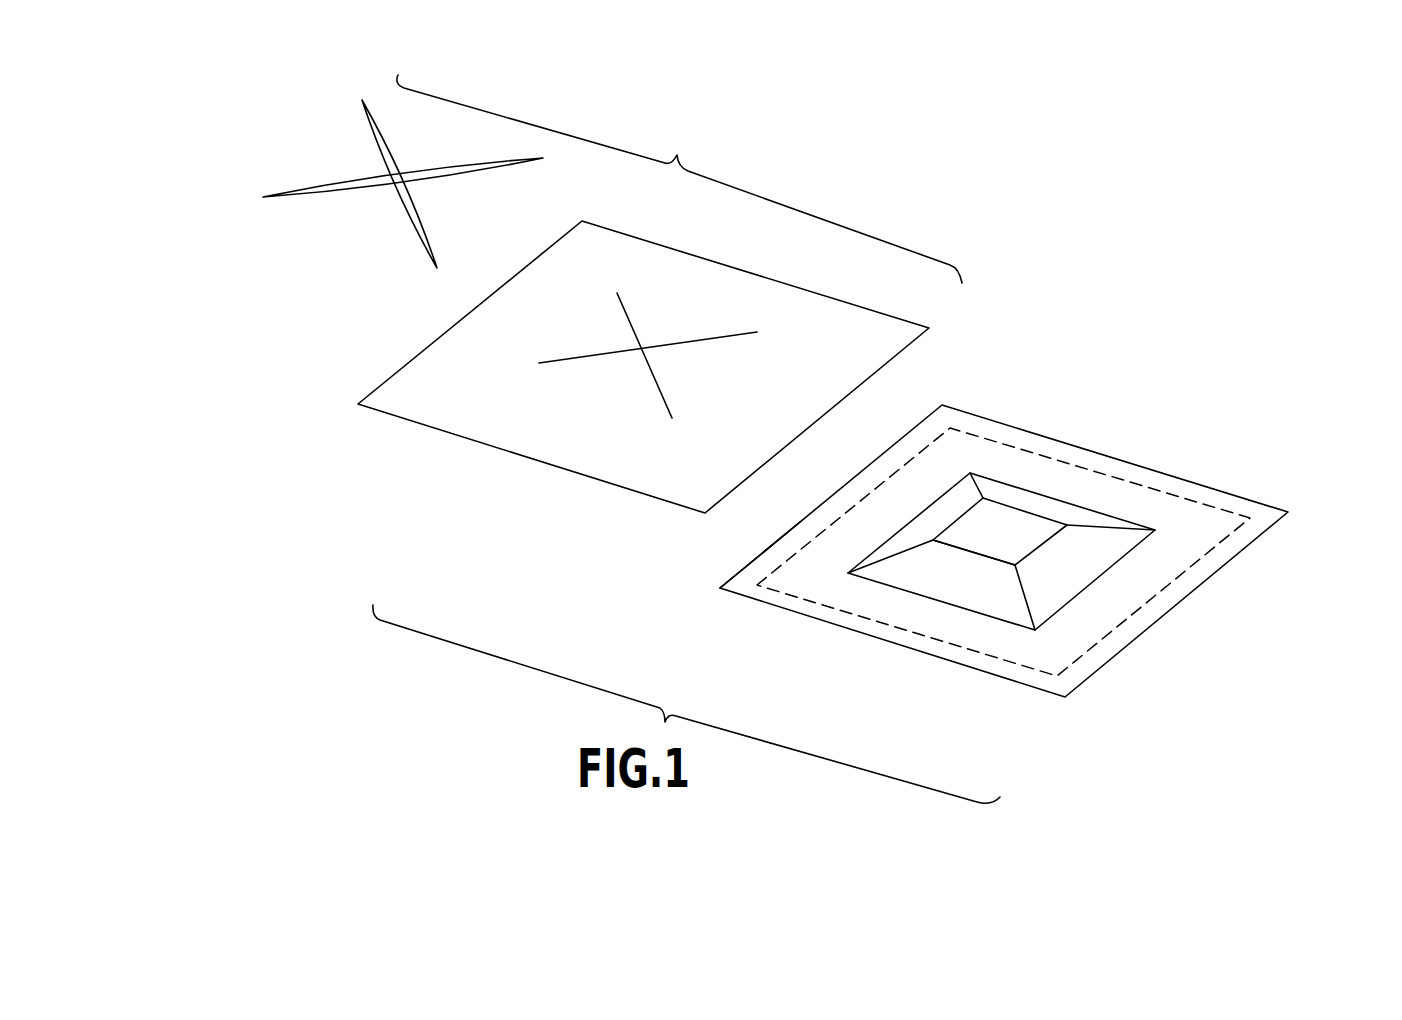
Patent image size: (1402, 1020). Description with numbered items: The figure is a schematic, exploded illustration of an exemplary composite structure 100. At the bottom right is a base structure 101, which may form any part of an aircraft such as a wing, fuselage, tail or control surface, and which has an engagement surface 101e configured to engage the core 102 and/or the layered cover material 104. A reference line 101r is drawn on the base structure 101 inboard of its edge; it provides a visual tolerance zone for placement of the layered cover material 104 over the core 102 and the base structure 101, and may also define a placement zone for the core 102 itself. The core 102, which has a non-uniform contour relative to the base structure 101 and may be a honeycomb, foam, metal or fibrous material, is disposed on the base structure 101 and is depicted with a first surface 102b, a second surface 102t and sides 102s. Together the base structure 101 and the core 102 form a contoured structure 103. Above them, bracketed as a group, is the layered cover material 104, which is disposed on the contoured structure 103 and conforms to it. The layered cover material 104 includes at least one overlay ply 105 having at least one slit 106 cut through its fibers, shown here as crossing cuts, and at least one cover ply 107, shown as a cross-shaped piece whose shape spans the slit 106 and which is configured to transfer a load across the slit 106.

The composite structure 100 is at (887, 108).
The base structure 101 is at (1275, 523).
The engagement surface 101e is at (788, 578).
The reference line 101r is at (1080, 655).
The core 102 is at (1157, 530).
The sides 102s is at (947, 500).
The first surface 102b is at (1013, 483).
The second surface 102t is at (988, 543).
The contoured structure 103 is at (1188, 362).
The layered cover material 104 is at (679, 179).
The overlay ply 105 is at (387, 417).
The slit 106 is at (655, 392).
The cover ply 107 is at (288, 199).